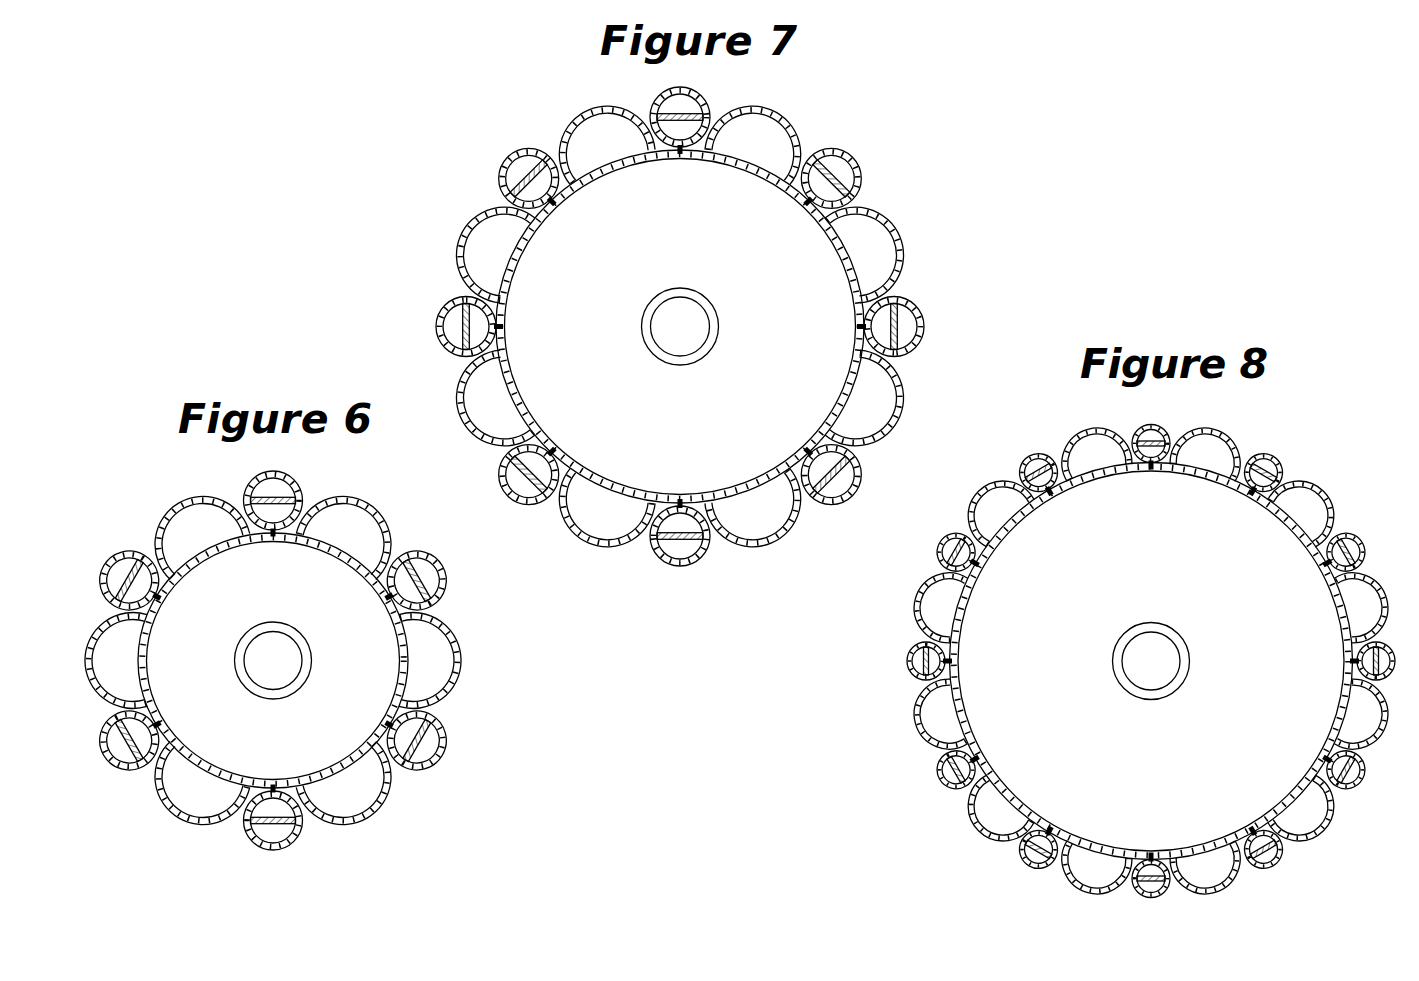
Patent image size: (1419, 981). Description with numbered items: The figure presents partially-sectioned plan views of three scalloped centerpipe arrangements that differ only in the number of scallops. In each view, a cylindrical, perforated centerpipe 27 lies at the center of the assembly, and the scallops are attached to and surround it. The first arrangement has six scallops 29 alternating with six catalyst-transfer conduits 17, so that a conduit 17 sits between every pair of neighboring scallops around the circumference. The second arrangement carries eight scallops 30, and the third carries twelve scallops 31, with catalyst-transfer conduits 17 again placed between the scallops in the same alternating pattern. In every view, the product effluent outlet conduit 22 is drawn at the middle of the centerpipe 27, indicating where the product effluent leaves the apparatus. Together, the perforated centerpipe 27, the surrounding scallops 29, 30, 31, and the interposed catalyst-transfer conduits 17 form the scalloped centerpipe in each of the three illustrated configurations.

In FIG. 6, the catalyst-transfer conduits 17 is at (276, 660).
In FIG. 7, the catalyst-transfer conduits 17 is at (681, 341).
In FIG. 8, the catalyst-transfer conduits 17 is at (1132, 660).
In FIG. 6, the product effluent outlet conduit 22 is at (288, 671).
In FIG. 7, the product effluent outlet conduit 22 is at (699, 341).
In FIG. 8, the product effluent outlet conduit 22 is at (1173, 675).
In FIG. 6, the cylindrical perforated centerpipe 27 is at (273, 660).
In FIG. 7, the cylindrical perforated centerpipe 27 is at (680, 326).
In FIG. 8, the cylindrical perforated centerpipe 27 is at (1151, 661).
In FIG. 6, the six scallops 29 is at (273, 665).
In FIG. 7, the eight scallops 30 is at (695, 318).
In FIG. 8, the twelve scallops 31 is at (1138, 662).